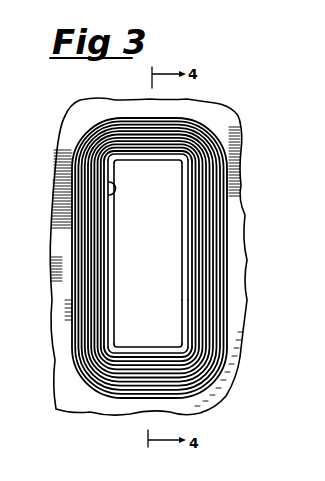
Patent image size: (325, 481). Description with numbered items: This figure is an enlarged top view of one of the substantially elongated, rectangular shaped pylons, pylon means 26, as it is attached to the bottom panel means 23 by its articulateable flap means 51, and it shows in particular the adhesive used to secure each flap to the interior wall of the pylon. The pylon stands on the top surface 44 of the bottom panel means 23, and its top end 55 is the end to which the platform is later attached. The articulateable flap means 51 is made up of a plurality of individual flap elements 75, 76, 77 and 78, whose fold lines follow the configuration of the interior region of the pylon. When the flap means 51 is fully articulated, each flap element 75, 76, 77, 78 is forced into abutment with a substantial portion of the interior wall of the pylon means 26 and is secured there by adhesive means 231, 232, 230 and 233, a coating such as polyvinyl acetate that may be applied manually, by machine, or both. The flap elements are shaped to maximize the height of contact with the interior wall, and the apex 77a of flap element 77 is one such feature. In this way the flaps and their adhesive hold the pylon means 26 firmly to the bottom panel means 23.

The bottom panel means 23 is at (245, 123).
The pylon means 26 is at (230, 288).
The top surface 44 is at (130, 102).
The articulateable flap means 51 is at (109, 186).
The top end 55 is at (220, 245).
The flap element 75 is at (141, 351).
The flap element 76 is at (114, 238).
The flap element 77 is at (183, 260).
The apex 77a is at (186, 308).
The flap element 78 is at (138, 165).
The adhesive means 230 is at (177, 123).
The adhesive means 231 is at (124, 356).
The adhesive means 232 is at (105, 226).
The adhesive means 233 is at (192, 215).